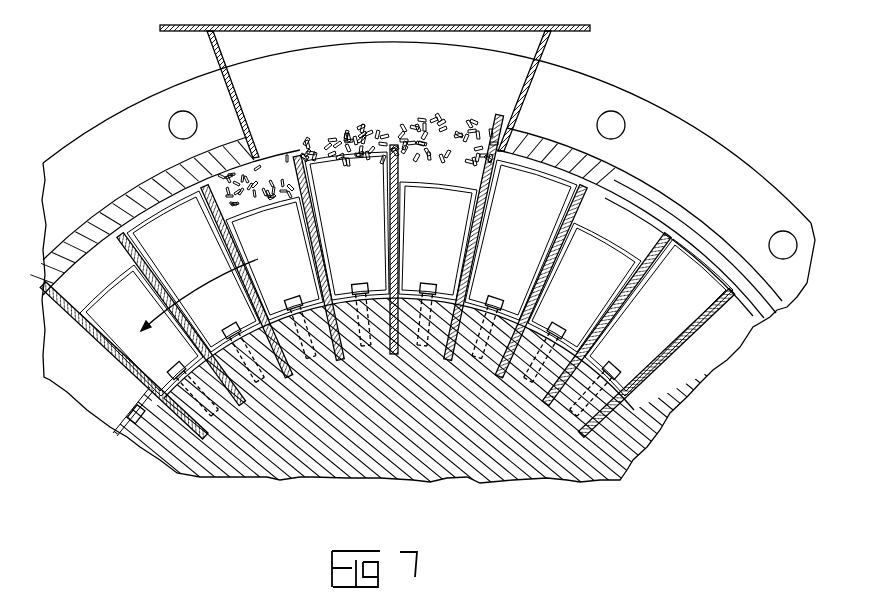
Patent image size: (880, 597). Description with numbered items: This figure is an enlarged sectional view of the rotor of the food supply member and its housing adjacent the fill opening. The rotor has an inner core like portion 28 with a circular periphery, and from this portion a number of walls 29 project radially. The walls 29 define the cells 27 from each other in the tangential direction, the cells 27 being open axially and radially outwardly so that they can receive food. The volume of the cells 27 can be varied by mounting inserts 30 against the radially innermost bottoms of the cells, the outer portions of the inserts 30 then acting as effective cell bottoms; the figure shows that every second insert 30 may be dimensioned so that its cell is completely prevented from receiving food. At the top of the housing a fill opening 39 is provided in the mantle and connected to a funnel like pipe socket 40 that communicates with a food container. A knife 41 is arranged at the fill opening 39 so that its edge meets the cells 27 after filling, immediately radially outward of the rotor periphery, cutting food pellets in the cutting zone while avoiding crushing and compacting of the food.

The cells 27 is at (617, 227).
The inner core like portion 28 is at (317, 428).
The walls 29 is at (126, 247).
The inserts 30 is at (345, 150).
The fill opening 39 is at (377, 120).
The funnel like pipe socket 40 is at (527, 84).
The knife 41 is at (278, 152).